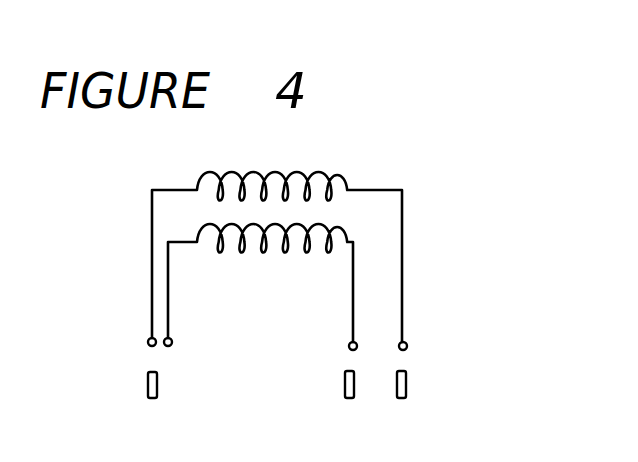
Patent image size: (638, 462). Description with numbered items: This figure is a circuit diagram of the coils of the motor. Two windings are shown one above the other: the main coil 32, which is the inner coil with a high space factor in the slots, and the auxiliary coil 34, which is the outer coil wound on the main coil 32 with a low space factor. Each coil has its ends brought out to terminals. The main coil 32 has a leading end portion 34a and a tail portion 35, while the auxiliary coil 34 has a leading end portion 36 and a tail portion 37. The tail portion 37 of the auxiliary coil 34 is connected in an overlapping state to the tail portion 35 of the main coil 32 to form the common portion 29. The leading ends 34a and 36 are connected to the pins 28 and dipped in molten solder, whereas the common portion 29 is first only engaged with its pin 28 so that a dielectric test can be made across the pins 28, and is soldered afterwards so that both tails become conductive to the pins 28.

The main coil 32 is at (265, 182).
The auxiliary coil 34 is at (255, 251).
The tail portion of the main coil 35 is at (148, 342).
The tail portion of the auxiliary coil 37 is at (172, 342).
The leading end portion of the auxiliary coil 36 is at (349, 346).
The leading end portion of the main coil 34a is at (407, 345).
The common portion 29 is at (152, 400).
The pin 28 is at (402, 400).